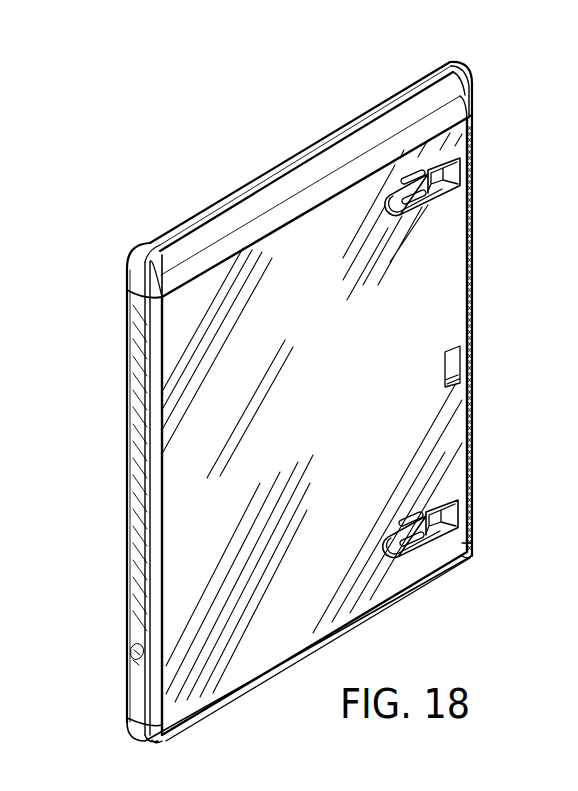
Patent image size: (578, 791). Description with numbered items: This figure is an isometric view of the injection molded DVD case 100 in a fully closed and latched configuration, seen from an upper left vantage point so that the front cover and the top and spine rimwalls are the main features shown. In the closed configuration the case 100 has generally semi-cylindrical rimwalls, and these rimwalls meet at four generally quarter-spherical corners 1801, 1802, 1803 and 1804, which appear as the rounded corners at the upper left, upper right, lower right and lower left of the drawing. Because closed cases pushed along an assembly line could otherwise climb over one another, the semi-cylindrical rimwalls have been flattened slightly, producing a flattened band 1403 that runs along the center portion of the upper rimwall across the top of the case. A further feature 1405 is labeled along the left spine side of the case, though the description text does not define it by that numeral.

The DVD case 100 is at (258, 120).
The flattened band 1403 is at (266, 172).
The left side edge of housing 1405 is at (128, 480).
The quarter-spherical corner 1801 is at (137, 257).
The quarter-spherical corner 1802 is at (463, 74).
The quarter-spherical corner 1803 is at (471, 557).
The quarter-spherical corner 1804 is at (145, 740).